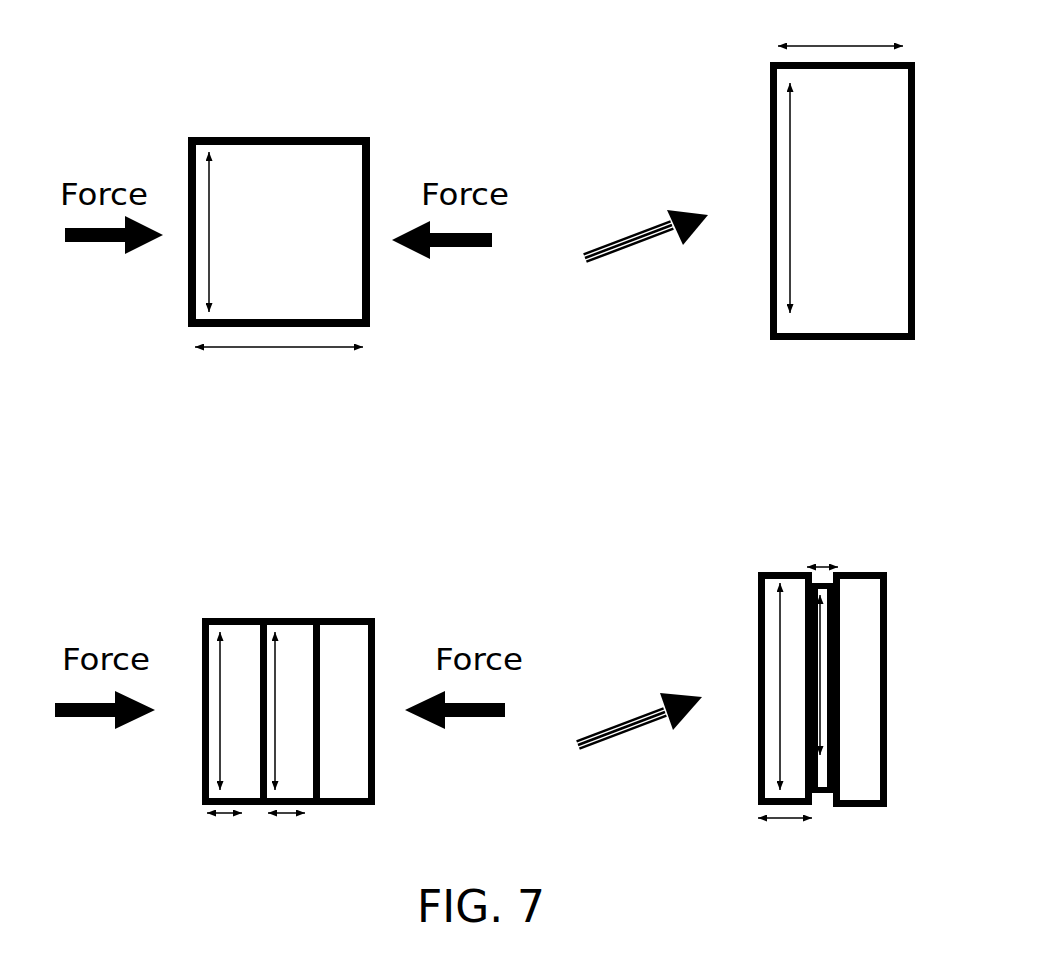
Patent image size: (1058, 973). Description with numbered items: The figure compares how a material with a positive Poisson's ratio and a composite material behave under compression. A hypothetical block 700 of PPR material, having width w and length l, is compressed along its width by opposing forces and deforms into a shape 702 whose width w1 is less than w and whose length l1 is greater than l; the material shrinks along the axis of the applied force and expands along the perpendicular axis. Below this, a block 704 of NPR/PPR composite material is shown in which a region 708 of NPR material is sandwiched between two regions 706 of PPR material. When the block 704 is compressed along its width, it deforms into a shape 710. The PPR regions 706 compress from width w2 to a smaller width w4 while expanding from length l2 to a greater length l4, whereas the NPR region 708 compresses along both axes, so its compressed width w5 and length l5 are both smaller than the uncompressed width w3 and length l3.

The block of PPR material 700 is at (295, 252).
The compressed block 702 is at (860, 207).
The block of NPR/PPR composite material 704 is at (239, 703).
The regions of PPR material 706 is at (203, 650).
The region of NPR material 708 is at (287, 618).
The deformed shape of composite block 710 is at (770, 572).